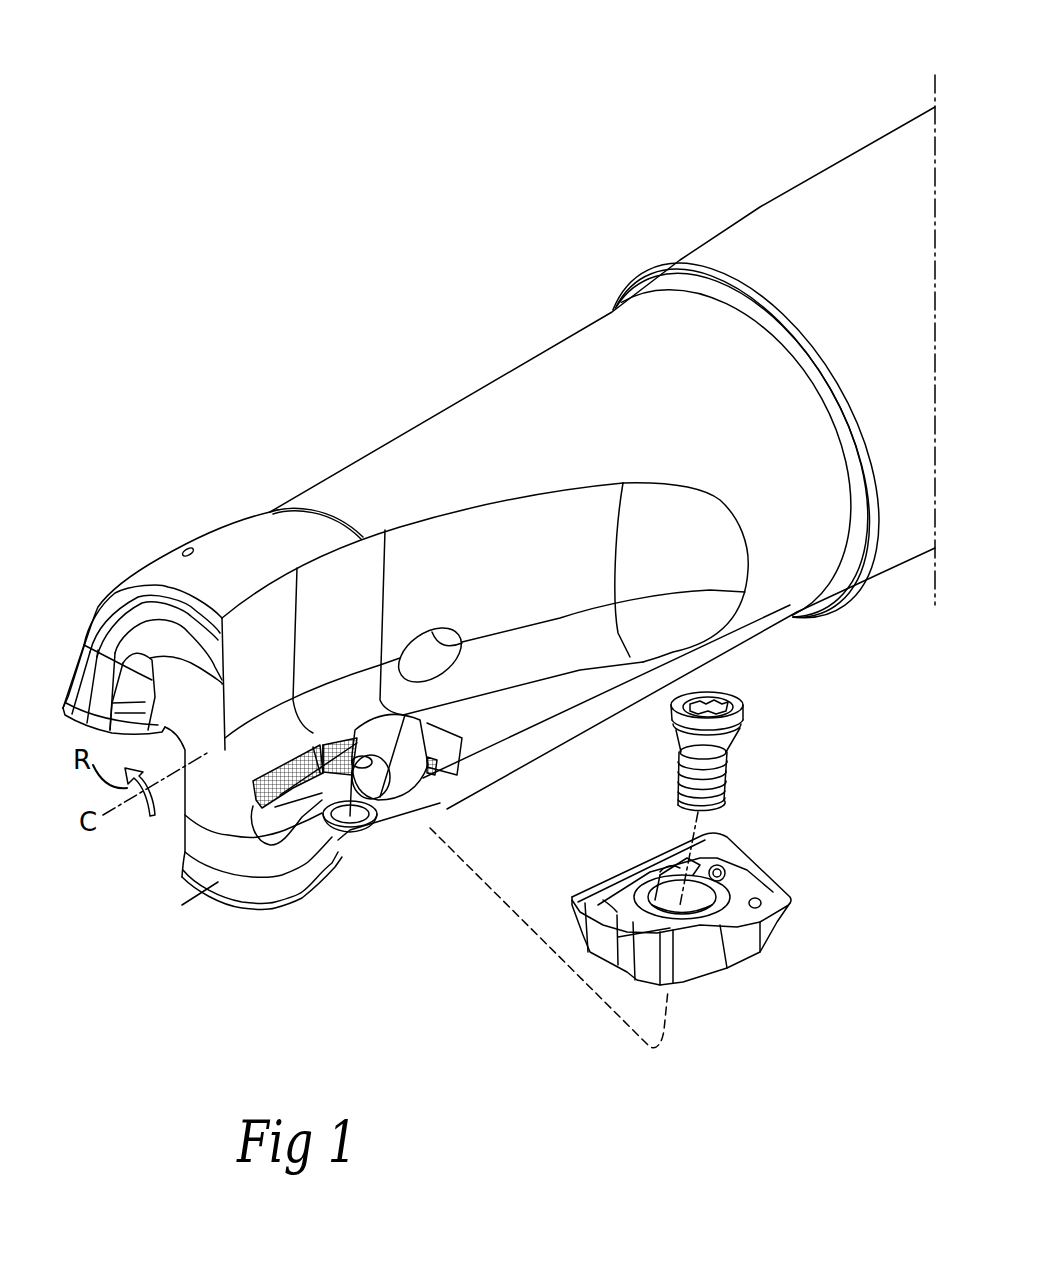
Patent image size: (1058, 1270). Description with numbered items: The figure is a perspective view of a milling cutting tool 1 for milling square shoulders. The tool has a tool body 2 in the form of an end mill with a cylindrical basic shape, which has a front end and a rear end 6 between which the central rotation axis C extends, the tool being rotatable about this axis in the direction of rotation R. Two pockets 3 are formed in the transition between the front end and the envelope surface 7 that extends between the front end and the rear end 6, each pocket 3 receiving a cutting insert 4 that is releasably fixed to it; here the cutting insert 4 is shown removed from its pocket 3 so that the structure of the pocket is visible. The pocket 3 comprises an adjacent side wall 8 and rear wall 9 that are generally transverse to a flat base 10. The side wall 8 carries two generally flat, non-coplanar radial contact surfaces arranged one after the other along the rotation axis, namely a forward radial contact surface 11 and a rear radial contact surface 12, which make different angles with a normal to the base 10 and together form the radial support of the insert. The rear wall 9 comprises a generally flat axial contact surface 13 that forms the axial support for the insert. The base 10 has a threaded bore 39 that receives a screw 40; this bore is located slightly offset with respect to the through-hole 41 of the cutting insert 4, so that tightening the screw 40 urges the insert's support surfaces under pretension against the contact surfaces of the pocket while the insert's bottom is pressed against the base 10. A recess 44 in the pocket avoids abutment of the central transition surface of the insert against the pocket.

The milling cutting tool 1 is at (602, 320).
The tool body 2 is at (360, 460).
The pocket 3 is at (332, 837).
The cutting insert 4 is at (703, 920).
The rear end 6 is at (935, 107).
The envelope surface 7 is at (447, 788).
The side wall 8 is at (313, 753).
The rear wall 9 is at (438, 777).
The base 10 is at (397, 816).
The forward radial contact surface 11 is at (272, 795).
The rear radial contact surface 12 is at (352, 745).
The axial contact surface 13 is at (428, 760).
The threaded bore 39 is at (360, 815).
The screw 40 is at (707, 782).
The through-hole 41 is at (683, 912).
The recess 44 is at (322, 757).